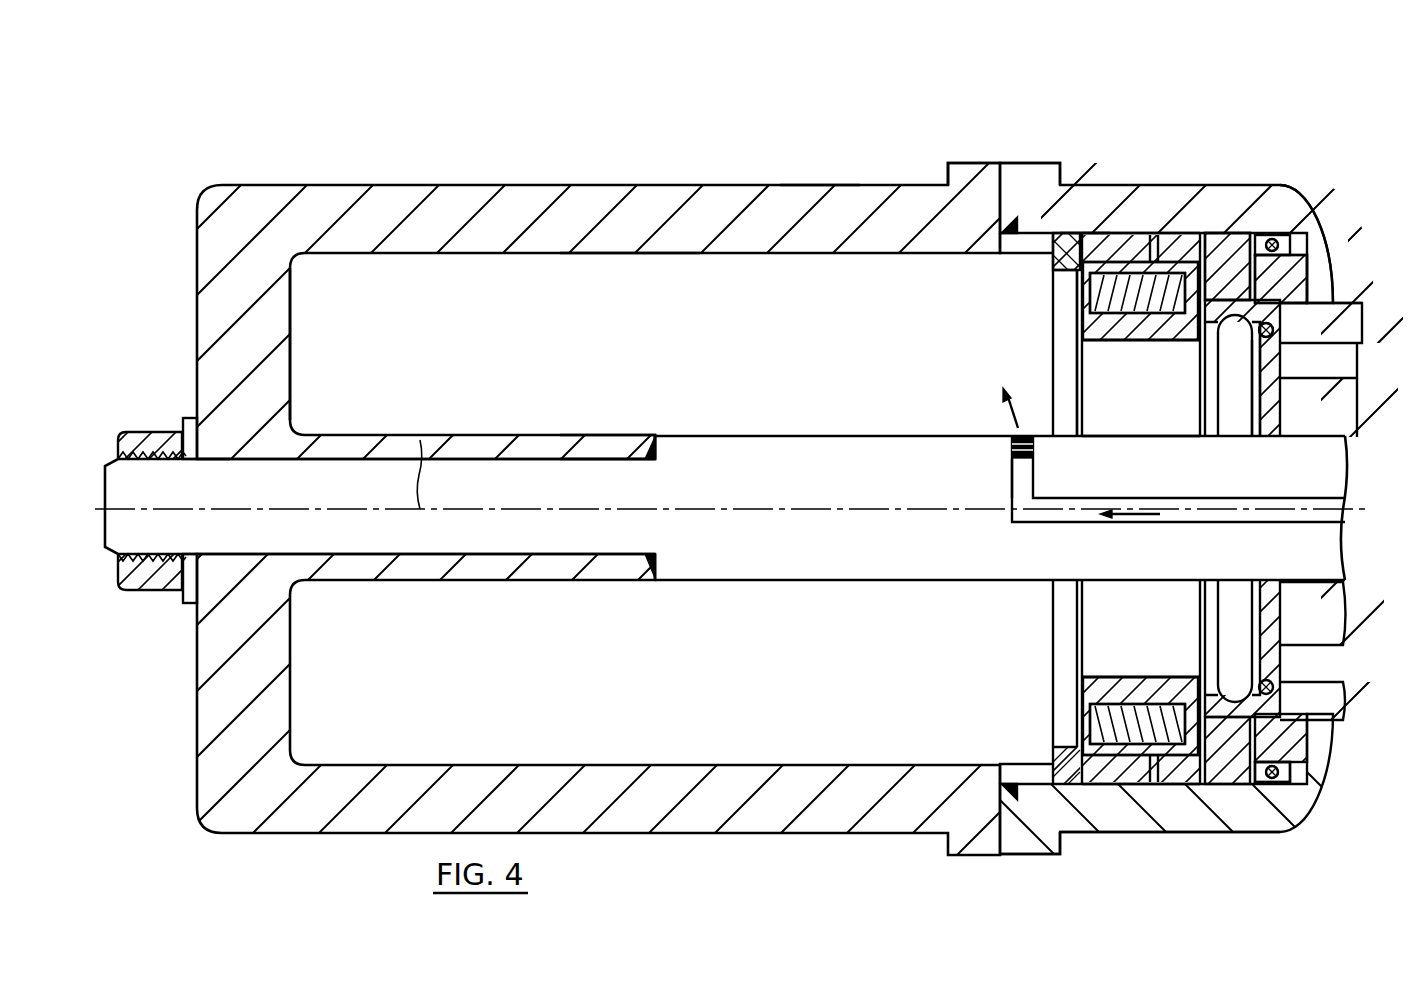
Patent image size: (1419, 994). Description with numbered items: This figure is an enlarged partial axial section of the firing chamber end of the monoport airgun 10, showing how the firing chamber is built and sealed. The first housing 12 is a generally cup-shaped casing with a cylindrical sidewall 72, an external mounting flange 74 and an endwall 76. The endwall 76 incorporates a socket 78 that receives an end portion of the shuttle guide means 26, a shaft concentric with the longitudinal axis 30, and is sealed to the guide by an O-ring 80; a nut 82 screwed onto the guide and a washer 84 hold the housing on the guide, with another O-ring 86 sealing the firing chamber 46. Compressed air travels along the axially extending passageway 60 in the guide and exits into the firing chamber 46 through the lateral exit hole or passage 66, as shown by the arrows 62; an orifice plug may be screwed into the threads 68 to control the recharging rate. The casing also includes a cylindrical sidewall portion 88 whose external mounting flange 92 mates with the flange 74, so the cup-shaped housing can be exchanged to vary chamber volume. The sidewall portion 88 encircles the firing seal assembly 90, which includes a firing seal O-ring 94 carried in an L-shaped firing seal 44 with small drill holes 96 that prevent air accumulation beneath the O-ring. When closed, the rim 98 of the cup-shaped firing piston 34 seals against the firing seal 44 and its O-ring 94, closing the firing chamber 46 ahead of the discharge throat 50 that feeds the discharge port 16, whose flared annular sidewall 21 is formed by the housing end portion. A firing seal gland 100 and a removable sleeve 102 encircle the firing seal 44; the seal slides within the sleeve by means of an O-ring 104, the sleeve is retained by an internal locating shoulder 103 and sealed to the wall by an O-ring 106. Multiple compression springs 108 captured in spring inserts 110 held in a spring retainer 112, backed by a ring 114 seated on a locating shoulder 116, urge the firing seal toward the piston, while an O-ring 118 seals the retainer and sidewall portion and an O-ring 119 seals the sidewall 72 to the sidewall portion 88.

The monoport airgun 10 is at (348, 123).
The first housing 12 is at (688, 185).
The discharge port 16 is at (1365, 248).
The annular sidewall 21 is at (1318, 240).
The shuttle guide means 26 is at (852, 436).
The longitudinal axis 30 is at (420, 435).
The firing piston 34 is at (1357, 302).
The firing seal 44 is at (1257, 345).
The firing chamber 46 is at (604, 309).
The discharge throat 50 is at (1163, 414).
The axially extending passageway 60 is at (1058, 513).
The arrow 62 is at (1015, 400).
The lateral exit hole or passage 66 is at (1012, 478).
The threads 68 is at (1033, 448).
The cylindrical sidewall 72 is at (812, 200).
The external mounting flange 74 is at (955, 163).
The endwall 76 is at (292, 310).
The socket 78 is at (597, 435).
The O-ring 80 is at (655, 455).
The nut 82 is at (150, 432).
The washer 84 is at (185, 420).
The O-ring 86 is at (203, 462).
The cylindrical sidewall portion 88 is at (1170, 195).
The firing seal assembly 90 is at (1165, 365).
The external mounting flange 92 is at (1037, 175).
The firing seal O-ring 94 is at (1275, 332).
The drill holes 96 is at (1243, 325).
The rim 98 is at (1290, 690).
The firing seal gland 100 is at (1228, 240).
The sleeve 102 is at (1290, 774).
The internal locating shoulder 103 is at (1300, 742).
The O-ring 104 is at (1298, 260).
The O-ring 106 is at (1270, 240).
The compression springs 108 is at (1090, 290).
The spring inserts 110 is at (1108, 335).
The spring retainer 112 is at (1100, 793).
The ring 114 is at (1068, 272).
The locating shoulder 116 is at (1058, 250).
The O-ring 118 is at (1085, 233).
The O-ring 119 is at (1003, 232).